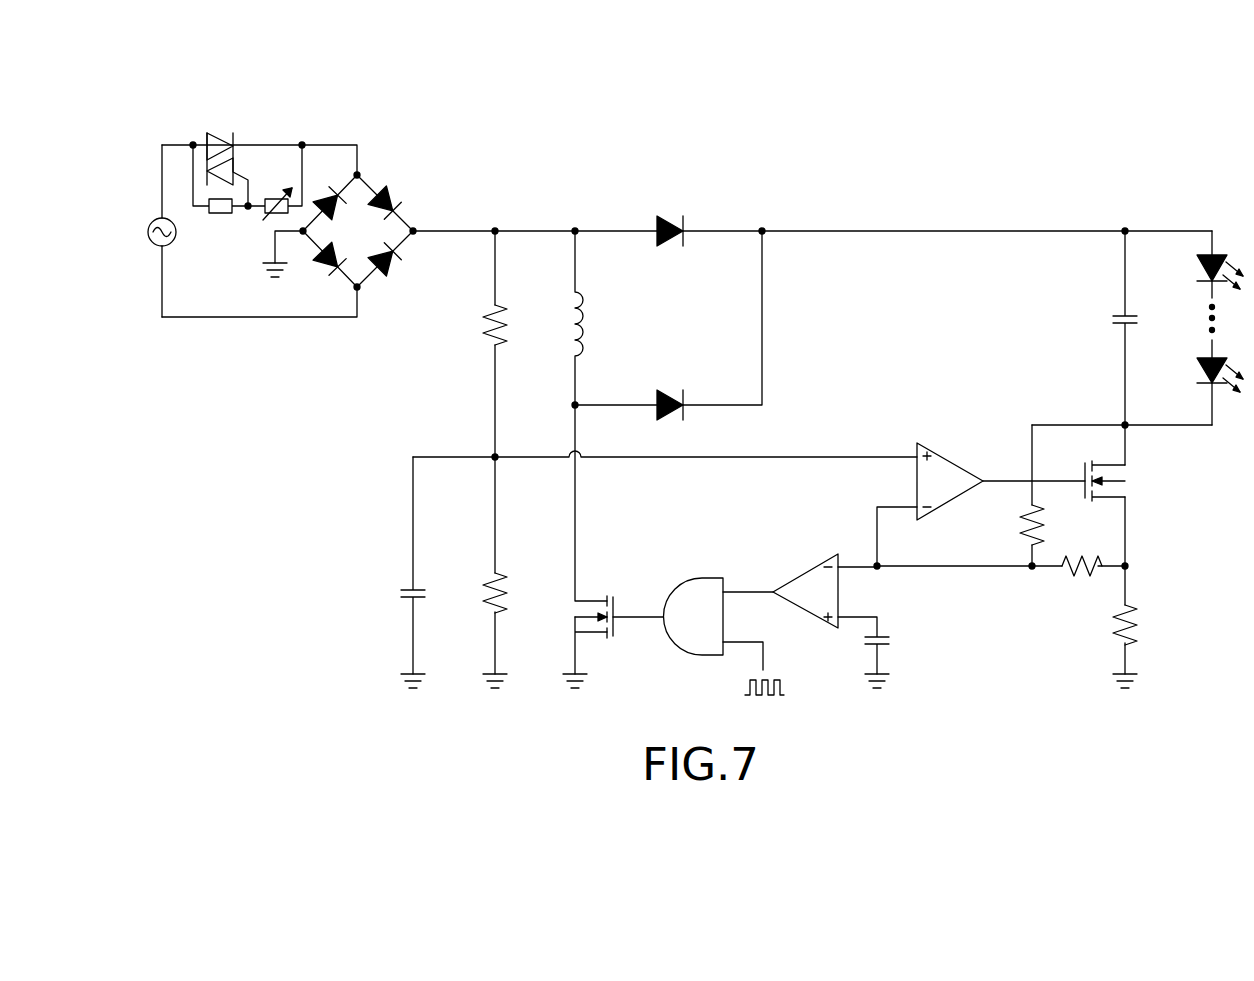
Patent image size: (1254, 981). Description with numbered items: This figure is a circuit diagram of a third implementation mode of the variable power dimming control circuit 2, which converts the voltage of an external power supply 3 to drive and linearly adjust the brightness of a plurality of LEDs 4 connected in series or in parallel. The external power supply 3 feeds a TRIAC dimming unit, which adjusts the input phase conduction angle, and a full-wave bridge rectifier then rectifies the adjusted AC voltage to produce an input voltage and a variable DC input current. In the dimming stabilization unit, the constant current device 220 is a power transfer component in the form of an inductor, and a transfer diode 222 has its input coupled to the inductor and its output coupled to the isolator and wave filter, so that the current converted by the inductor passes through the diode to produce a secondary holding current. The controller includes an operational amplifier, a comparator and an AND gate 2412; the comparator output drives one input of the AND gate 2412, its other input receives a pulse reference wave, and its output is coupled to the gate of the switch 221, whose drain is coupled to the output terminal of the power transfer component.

The variable power dimming control circuit 2 is at (190, 109).
The external power supply 3 is at (153, 218).
The LEDs 4 is at (1216, 250).
The constant current device 220 is at (578, 290).
The switch 221 is at (619, 604).
The transfer diode 222 is at (690, 400).
The AND gate 2412 is at (730, 579).